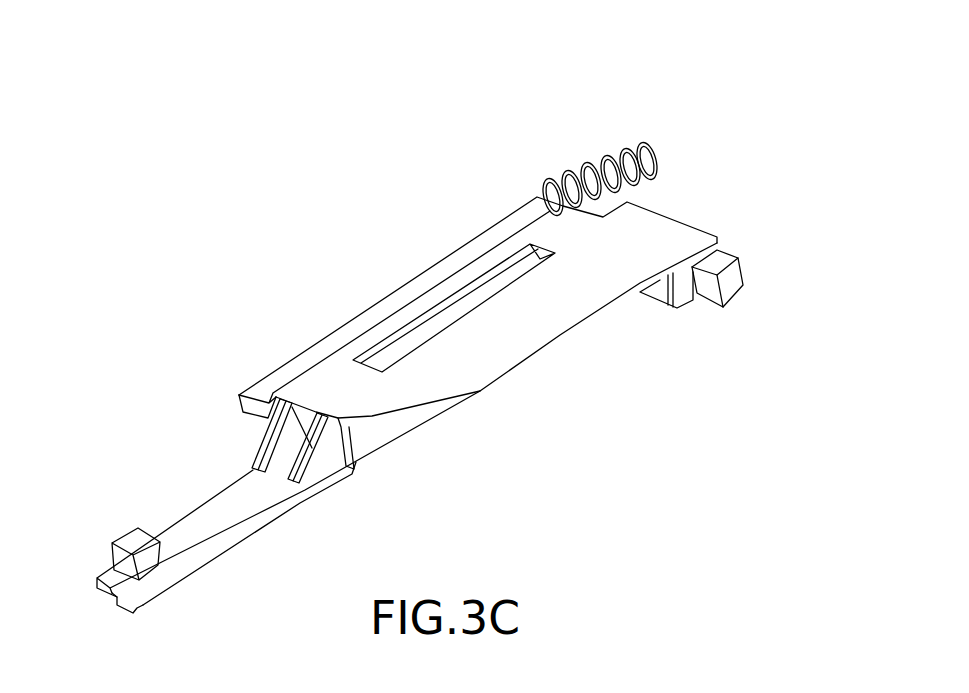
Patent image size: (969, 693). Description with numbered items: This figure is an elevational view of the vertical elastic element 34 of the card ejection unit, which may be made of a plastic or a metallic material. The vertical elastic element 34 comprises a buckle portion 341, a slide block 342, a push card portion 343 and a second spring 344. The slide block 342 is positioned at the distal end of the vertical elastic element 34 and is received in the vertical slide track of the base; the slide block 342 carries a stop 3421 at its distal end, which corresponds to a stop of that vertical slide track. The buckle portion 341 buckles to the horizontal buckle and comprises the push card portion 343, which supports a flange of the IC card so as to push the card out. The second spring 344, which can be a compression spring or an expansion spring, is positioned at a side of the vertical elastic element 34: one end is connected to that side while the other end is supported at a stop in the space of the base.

The vertical elastic element 34 is at (473, 258).
The buckle portion 341 is at (712, 292).
The slide block 342 is at (140, 530).
The stop 3421 is at (97, 577).
The push card portion 343 is at (660, 285).
The second spring 344 is at (625, 143).